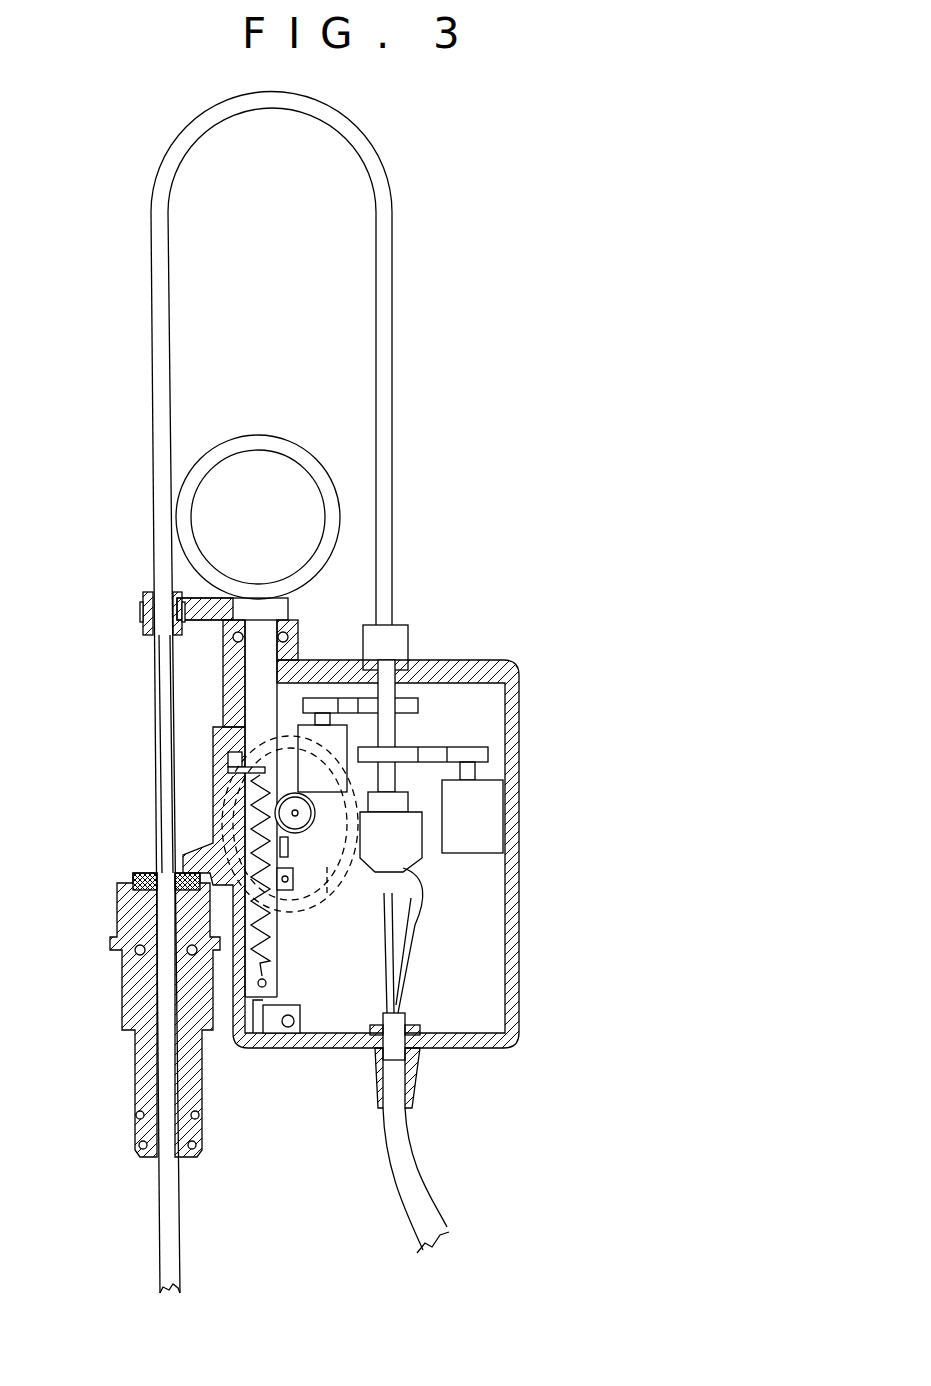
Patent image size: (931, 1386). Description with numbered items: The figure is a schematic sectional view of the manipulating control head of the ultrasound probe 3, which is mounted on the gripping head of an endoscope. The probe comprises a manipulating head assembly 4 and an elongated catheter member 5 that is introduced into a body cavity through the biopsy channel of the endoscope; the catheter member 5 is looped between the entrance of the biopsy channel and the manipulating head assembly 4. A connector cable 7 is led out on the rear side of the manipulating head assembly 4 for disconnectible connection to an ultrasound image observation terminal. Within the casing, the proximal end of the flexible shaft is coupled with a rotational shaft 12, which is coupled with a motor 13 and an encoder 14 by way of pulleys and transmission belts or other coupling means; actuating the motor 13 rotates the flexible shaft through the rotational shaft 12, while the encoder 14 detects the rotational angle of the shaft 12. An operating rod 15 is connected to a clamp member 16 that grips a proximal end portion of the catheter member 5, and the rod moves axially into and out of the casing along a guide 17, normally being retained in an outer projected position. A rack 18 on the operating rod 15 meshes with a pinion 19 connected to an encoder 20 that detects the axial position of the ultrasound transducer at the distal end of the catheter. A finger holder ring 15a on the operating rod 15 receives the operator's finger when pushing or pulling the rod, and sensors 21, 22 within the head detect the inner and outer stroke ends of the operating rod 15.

The ultrasound probe 3 is at (373, 884).
The manipulating head assembly 4 is at (513, 892).
The catheter member 5 is at (388, 277).
The connector cable 7 is at (413, 1190).
The rotational shaft 12 is at (392, 730).
The motor 13 is at (482, 817).
The encoder 14 is at (340, 735).
The operating rod 15 is at (255, 708).
The finger holder ring 15a is at (338, 508).
The clamp member 16 is at (137, 598).
The guide 17 is at (252, 672).
The rack 18 is at (292, 925).
The pinion 19 is at (278, 806).
The encoder 20 is at (327, 867).
The sensor 21 is at (270, 866).
The sensor 22 is at (277, 1053).